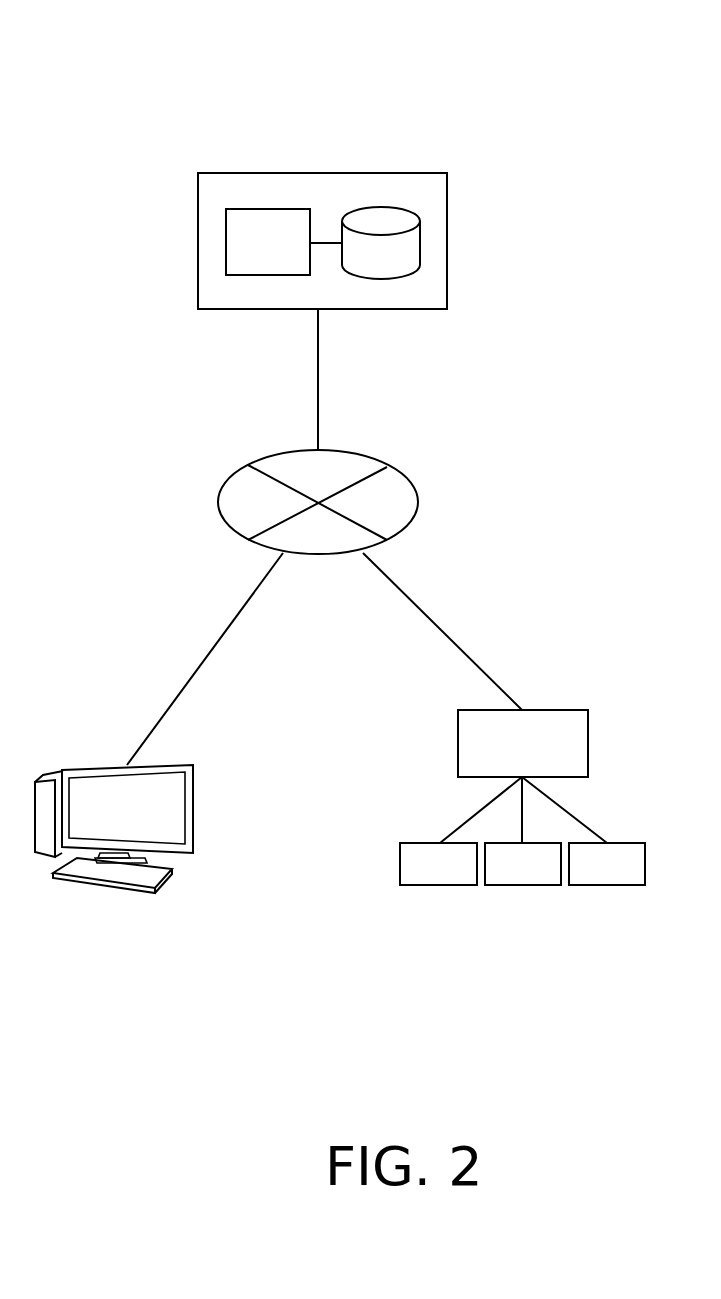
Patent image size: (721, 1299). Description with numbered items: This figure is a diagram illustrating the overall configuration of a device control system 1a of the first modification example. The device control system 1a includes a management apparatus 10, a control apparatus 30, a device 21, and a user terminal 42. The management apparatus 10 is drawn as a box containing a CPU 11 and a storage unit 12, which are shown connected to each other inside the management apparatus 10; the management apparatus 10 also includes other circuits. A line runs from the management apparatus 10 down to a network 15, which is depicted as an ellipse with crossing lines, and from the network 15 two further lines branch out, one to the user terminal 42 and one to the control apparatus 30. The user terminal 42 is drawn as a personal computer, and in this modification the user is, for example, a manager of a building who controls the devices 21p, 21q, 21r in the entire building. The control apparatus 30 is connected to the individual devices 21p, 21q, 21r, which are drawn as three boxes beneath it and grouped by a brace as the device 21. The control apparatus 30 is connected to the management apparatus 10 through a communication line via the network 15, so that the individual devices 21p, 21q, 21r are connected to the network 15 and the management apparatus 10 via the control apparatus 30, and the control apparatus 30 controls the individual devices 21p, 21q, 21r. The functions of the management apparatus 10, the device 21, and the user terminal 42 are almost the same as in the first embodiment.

The device control system 1a is at (101, 90).
The management apparatus 10 is at (225, 175).
The CPU 11 is at (268, 208).
The storage unit 12 is at (381, 220).
The network 15 is at (332, 489).
The user terminal 42 is at (88, 768).
The control apparatus 30 is at (523, 743).
The device 21p is at (438, 864).
The device 21q is at (523, 864).
The device 21r is at (607, 864).
The device 21 is at (643, 895).